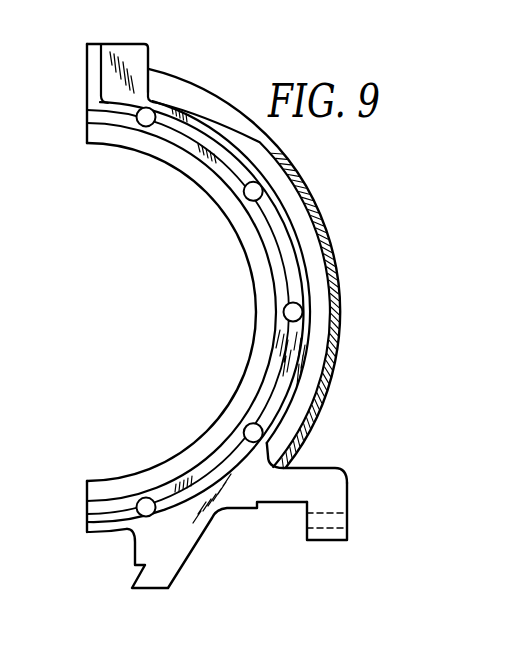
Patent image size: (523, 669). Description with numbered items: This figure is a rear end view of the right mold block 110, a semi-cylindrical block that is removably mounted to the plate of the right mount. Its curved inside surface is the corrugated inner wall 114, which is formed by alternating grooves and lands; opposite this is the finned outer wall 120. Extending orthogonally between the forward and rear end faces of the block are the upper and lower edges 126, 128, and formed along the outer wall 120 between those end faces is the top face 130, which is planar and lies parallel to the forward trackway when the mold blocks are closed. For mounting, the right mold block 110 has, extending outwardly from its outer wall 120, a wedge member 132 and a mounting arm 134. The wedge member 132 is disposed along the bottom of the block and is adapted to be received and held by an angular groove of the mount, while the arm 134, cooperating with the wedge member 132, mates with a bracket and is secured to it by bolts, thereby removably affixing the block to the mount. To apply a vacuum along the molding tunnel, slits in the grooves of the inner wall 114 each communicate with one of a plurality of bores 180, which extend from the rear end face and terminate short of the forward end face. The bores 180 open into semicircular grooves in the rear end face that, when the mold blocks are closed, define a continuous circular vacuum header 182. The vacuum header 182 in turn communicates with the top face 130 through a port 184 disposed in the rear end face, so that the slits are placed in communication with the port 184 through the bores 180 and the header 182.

The right mold block 110 is at (251, 38).
The corrugated inner wall 114 is at (252, 350).
The finned outer wall 120 is at (333, 258).
The upper edge 126 is at (86, 90).
The lower edge 128 is at (87, 507).
The top face 130 is at (123, 44).
The wedge member 132 is at (166, 574).
The mounting arm 134 is at (347, 510).
The bores 180 is at (260, 183).
The vacuum header 182 is at (281, 238).
The port 184 is at (93, 66).